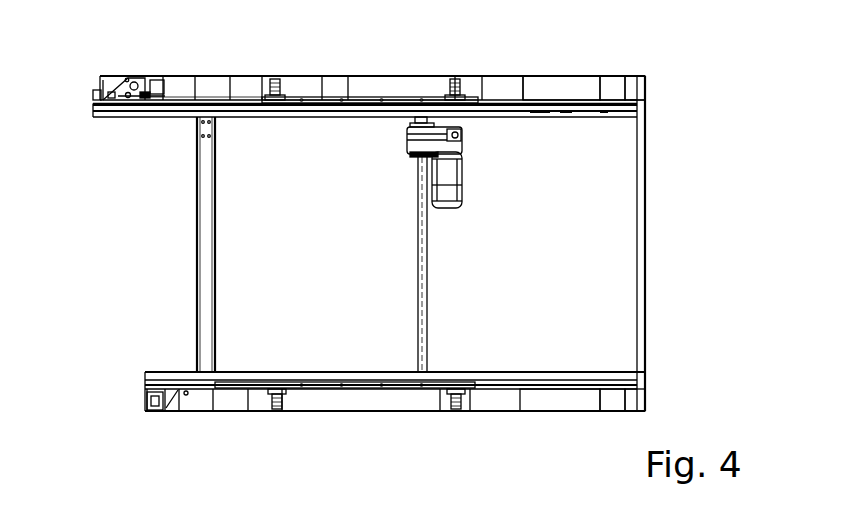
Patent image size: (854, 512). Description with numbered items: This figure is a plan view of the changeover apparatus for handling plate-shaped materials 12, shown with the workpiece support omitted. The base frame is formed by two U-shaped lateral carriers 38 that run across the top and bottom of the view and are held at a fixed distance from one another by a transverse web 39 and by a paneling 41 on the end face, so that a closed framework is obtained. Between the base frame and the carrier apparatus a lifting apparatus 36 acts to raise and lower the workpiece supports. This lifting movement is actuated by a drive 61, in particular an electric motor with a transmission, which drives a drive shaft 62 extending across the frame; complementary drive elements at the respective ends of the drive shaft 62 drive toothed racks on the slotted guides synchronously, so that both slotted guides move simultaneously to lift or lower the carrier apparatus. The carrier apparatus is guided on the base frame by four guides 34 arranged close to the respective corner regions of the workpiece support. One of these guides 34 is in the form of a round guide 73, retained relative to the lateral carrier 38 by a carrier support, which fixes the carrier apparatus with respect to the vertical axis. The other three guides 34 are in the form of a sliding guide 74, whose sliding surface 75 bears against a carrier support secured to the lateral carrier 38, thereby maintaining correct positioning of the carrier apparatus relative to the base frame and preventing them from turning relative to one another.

The plate-shaped materials 12 is at (662, 113).
The guides 34 is at (140, 73).
The lifting apparatus 36 is at (328, 420).
The lateral carriers 38 is at (570, 88).
The transverse web 39 is at (207, 268).
The paneling 41 is at (642, 238).
The drive 61 is at (475, 181).
The drive shaft 62 is at (424, 268).
The round guide 73 is at (140, 90).
The sliding guide 74 is at (171, 397).
The sliding surface 75 is at (147, 402).